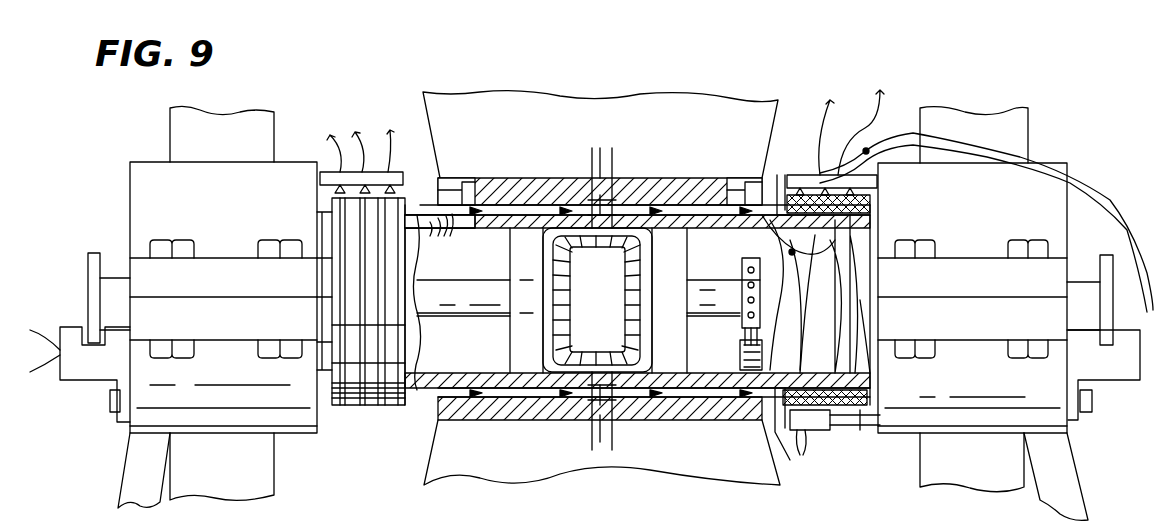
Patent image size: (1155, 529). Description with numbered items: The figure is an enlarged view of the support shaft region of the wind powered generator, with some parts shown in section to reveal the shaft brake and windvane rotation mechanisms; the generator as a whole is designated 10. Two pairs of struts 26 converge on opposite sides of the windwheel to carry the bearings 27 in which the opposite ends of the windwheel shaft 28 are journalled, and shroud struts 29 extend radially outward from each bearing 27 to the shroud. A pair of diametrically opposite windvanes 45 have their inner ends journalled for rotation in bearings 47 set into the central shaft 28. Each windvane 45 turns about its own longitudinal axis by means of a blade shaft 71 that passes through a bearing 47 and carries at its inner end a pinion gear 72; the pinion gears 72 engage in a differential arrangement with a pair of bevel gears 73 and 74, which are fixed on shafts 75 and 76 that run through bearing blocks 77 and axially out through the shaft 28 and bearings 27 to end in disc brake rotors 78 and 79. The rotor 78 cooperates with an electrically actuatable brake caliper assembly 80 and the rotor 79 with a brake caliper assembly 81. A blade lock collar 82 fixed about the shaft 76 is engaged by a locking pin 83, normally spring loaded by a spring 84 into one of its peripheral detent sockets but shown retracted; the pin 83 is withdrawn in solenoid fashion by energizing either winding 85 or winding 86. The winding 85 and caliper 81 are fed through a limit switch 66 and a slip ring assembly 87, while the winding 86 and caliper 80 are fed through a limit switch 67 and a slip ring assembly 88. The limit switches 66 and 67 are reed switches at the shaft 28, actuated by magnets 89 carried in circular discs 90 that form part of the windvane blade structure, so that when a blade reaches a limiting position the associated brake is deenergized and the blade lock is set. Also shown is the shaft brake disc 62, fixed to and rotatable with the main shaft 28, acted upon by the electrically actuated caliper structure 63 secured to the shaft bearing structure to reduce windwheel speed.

The section line 10 is at (592, 148).
The struts 26 is at (130, 452).
The bearings 27 is at (135, 168).
The windwheel shaft 28 is at (328, 398).
The shroud struts 29 is at (176, 138).
The windvanes 45 is at (565, 100).
The bearings 47 is at (614, 195).
The disc 62 is at (773, 436).
The caliper structure 63 is at (818, 428).
The limit switch 66 is at (780, 234).
The limit switch 67 is at (449, 232).
The blade shafts 71 is at (598, 190).
The pinion gears 72 is at (606, 252).
The bevel gear 73 is at (560, 298).
The bevel gear 74 is at (632, 300).
The shaft 75 is at (497, 296).
The shaft 76 is at (722, 293).
The bearing blocks 77 is at (510, 336).
The disc brake rotor 78 is at (92, 268).
The disc brake rotor 79 is at (1106, 256).
The brake caliper assembly 80 is at (102, 378).
The brake caliper assembly 81 is at (1112, 372).
The collar 82 is at (752, 289).
The locking pin 83 is at (745, 333).
The spring 84 is at (765, 368).
The blade lock winding 85 is at (785, 346).
The blade lock winding 86 is at (742, 351).
The slip ring assembly 87 is at (782, 180).
The slip ring assembly 88 is at (398, 178).
The magnets 89 is at (460, 186).
The circular discs 90 is at (505, 190).